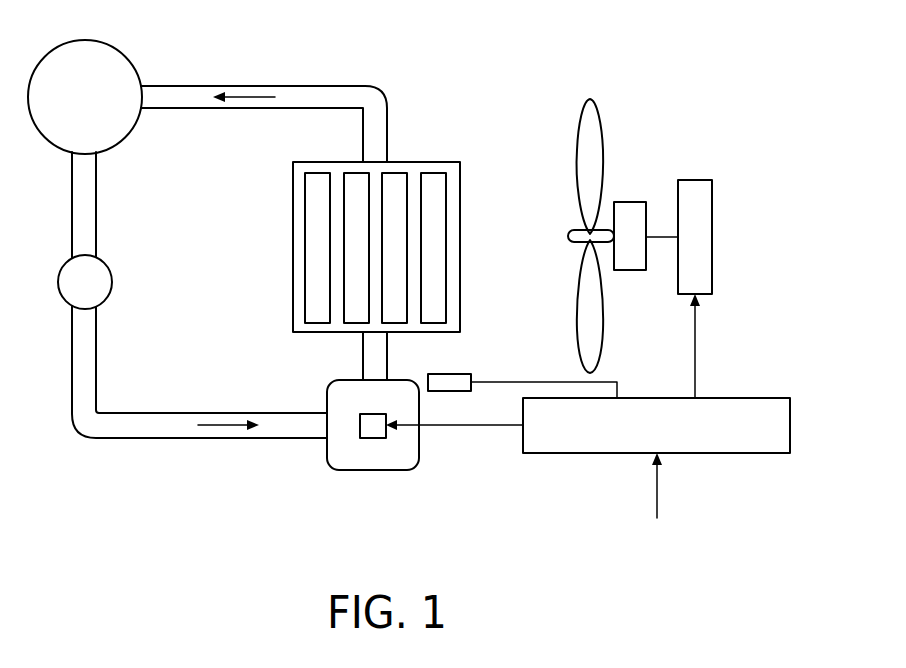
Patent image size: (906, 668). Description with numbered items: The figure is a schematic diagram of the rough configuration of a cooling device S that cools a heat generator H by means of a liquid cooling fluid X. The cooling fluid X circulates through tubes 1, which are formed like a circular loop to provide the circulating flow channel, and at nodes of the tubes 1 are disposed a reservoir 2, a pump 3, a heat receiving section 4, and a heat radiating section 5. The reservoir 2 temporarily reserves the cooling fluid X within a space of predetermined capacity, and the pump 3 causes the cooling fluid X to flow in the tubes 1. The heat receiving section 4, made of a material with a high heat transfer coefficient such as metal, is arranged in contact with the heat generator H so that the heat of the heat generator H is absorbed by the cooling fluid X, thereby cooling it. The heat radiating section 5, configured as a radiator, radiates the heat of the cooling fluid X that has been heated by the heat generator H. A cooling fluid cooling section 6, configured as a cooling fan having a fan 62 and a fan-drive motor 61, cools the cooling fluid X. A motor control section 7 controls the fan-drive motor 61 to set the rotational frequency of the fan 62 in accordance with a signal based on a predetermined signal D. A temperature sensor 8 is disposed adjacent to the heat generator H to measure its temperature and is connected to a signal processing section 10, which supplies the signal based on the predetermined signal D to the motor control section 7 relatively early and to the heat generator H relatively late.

The tubes 1 is at (316, 86).
The reservoir 2 is at (126, 57).
The pump 3 is at (112, 283).
The heat receiving section 4 is at (389, 470).
The heat radiating section 5 is at (447, 162).
The cooling fluid cooling section 6 is at (623, 190).
The fan-drive motor 61 is at (628, 202).
The fan 62 is at (591, 99).
The motor control section 7 is at (712, 193).
The temperature sensor 8 is at (462, 375).
The signal processing section 10 is at (750, 453).
The heat generator H is at (360, 426).
The cooling fluid X is at (244, 86).
The cooling device S is at (707, 67).
The predetermined signal D is at (659, 545).